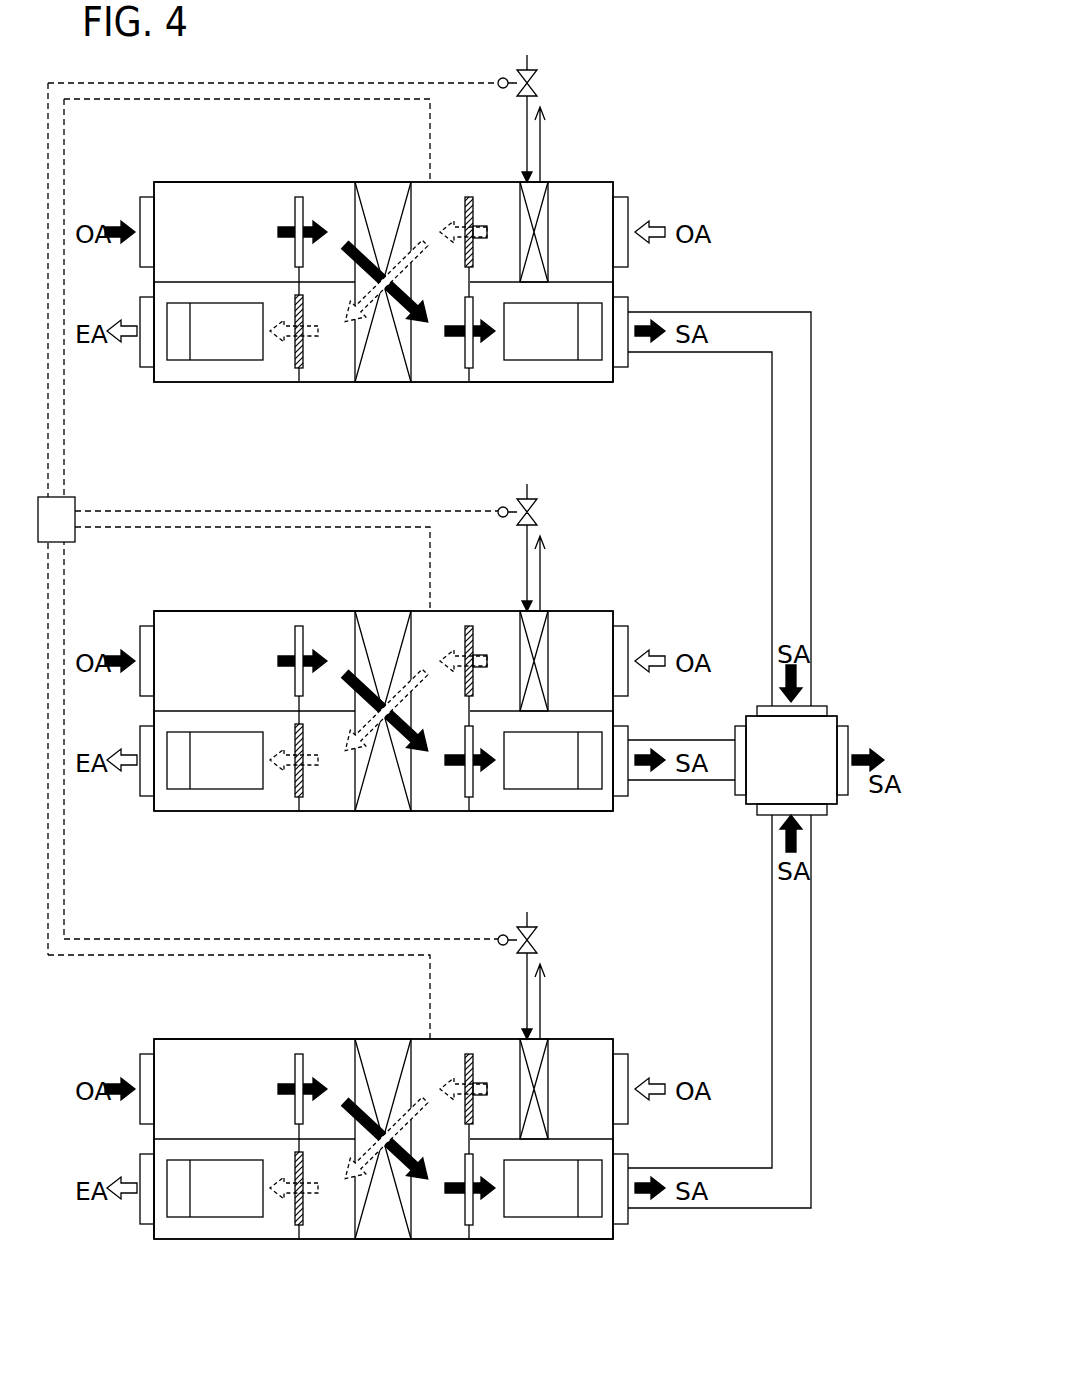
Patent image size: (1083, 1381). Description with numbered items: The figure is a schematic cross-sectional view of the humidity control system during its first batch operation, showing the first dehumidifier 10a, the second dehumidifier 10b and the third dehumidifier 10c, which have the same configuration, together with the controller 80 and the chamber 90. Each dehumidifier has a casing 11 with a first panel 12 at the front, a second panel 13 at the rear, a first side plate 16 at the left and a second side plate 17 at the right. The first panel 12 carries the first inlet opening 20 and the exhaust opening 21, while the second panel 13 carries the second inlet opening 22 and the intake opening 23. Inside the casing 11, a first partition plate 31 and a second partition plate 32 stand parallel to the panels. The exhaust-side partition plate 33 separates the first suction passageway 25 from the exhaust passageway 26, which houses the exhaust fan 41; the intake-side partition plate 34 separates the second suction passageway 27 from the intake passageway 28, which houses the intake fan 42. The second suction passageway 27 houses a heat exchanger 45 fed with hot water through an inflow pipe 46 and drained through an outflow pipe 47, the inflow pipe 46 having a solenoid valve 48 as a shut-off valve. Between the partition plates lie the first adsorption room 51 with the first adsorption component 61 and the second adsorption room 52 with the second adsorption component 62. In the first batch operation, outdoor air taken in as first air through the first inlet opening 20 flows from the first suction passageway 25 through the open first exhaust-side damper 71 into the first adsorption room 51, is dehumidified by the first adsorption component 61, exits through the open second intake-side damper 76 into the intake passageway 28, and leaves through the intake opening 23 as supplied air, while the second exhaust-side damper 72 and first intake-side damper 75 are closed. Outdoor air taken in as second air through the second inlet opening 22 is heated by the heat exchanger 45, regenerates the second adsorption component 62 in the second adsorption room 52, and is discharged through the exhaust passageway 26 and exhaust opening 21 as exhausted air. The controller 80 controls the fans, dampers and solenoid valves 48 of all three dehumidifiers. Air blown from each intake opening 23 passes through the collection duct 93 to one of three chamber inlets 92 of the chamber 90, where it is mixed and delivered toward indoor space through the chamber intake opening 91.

The first dehumidifier 10a is at (604, 183).
The second dehumidifier 10b is at (604, 612).
The third dehumidifier 10c is at (604, 1040).
The casing 11 is at (185, 182).
The first panel 12 is at (154, 282).
The second panel 13 is at (613, 282).
The first side plate 16 is at (212, 181).
The second side plate 17 is at (512, 383).
The first inlet opening 20 is at (150, 197).
The exhaust opening 21 is at (147, 368).
The second inlet opening 22 is at (622, 196).
The intake opening 23 is at (622, 370).
The first suction passageway 25 is at (244, 193).
The exhaust passageway 26 is at (255, 373).
The second suction passageway 27 is at (583, 200).
The intake passageway 28 is at (538, 372).
The first partition plate 31 is at (298, 196).
The second partition plate 32 is at (466, 196).
The exhaust-side partition plate 33 is at (172, 282).
The intake-side partition plate 34 is at (560, 282).
The exhaust fan 41 is at (206, 361).
The intake fan 42 is at (570, 361).
The heat exchanger 45 is at (550, 200).
The inflow pipe 46 is at (527, 122).
The outflow pipe 47 is at (541, 126).
The solenoid valve 48 is at (498, 83).
The first adsorption room 51 is at (334, 364).
The second adsorption room 52 is at (447, 364).
The first adsorption component 61 is at (411, 367).
The second adsorption component 62 is at (398, 742).
The first exhaust-side damper 71 is at (304, 210).
The second exhaust-side damper 72 is at (304, 364).
The first intake-side damper 75 is at (476, 210).
The second intake-side damper 76 is at (474, 362).
The controller 80 is at (75, 498).
The chamber 90 is at (852, 802).
The chamber intake opening 91 is at (848, 740).
The chamber inlet 92 is at (826, 706).
The collection duct 93 is at (811, 410).